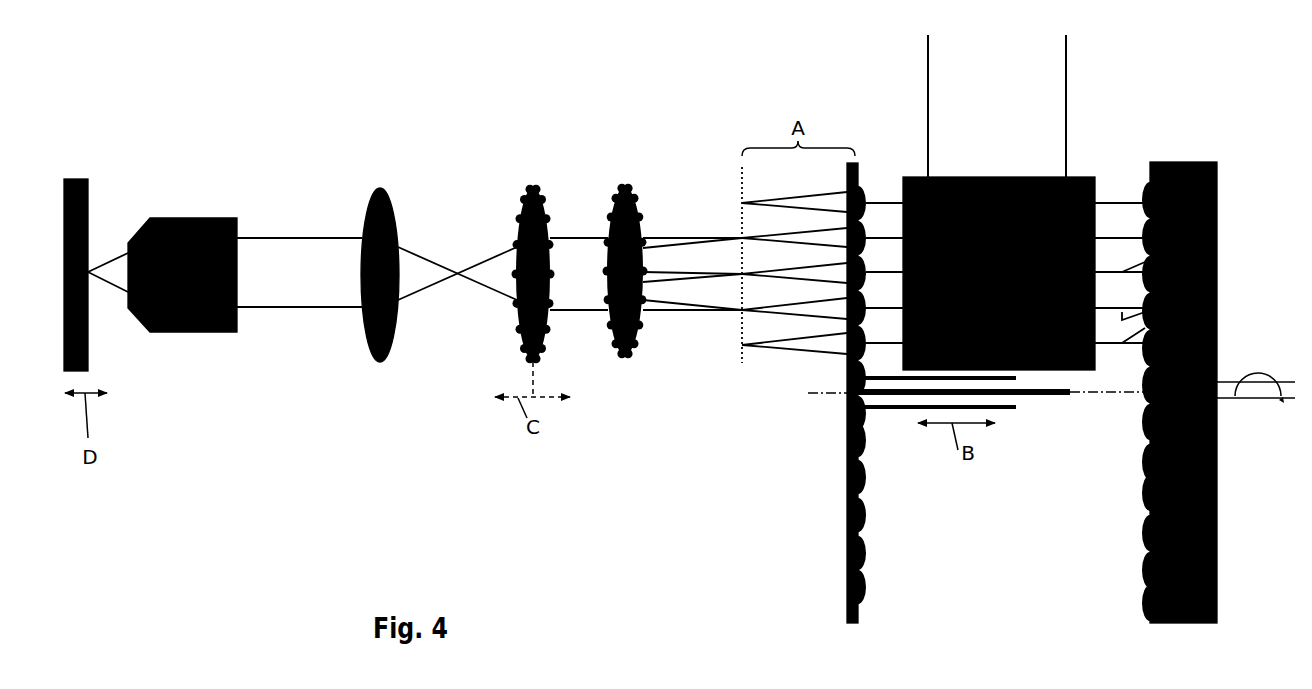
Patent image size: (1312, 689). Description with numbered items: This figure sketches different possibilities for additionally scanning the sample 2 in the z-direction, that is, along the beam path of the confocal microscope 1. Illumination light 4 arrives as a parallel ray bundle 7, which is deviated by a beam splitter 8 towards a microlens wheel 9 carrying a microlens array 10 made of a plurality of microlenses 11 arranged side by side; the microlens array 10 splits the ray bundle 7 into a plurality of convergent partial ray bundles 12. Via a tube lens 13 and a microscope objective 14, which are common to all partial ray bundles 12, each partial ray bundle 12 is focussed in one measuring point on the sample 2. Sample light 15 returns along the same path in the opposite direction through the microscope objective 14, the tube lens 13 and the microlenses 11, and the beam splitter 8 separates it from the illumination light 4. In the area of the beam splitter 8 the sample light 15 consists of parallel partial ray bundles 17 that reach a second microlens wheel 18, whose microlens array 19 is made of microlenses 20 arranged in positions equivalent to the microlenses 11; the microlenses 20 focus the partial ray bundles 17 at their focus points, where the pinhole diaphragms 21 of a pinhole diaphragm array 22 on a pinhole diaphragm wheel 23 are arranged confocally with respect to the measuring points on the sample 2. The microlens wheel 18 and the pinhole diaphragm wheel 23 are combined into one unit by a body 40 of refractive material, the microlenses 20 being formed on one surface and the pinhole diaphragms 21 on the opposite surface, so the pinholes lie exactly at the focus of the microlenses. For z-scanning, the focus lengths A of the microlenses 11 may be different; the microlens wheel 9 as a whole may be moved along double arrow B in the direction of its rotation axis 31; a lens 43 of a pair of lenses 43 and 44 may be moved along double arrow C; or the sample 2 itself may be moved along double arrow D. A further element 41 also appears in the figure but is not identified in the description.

The confocal microscope 1 is at (698, 115).
The sample 2 is at (77, 178).
The illumination light 4 is at (1042, 78).
The parallel ray bundle 7 is at (1052, 110).
The beam splitter 8 is at (1073, 177).
The microlens wheel 9 is at (848, 610).
The microlens array 10 is at (844, 393).
The microlenses 11 is at (864, 515).
The convergent partial ray bundles 12 is at (793, 348).
The tube lens 13 is at (383, 188).
The microscope objective 14 is at (170, 218).
The sample light 15 is at (1210, 236).
The parallel partial ray bundles 17 is at (1215, 285).
The second microlens wheel 18 is at (1152, 610).
The microlens array 19 is at (1139, 537).
The microlenses 20 is at (1146, 475).
The pinhole diaphragms 21 is at (1215, 548).
The pinhole diaphragm array 22 is at (1222, 523).
The pinhole diaphragm wheel 23 is at (1215, 602).
The rotation axis 31 is at (822, 397).
The body of refractive material 40 is at (1217, 462).
The viewer / eye 41 is at (1253, 368).
The lens 43 is at (547, 342).
The lens 44 is at (630, 353).